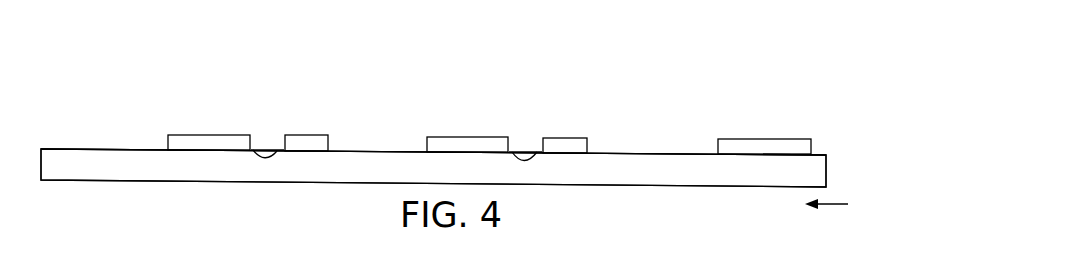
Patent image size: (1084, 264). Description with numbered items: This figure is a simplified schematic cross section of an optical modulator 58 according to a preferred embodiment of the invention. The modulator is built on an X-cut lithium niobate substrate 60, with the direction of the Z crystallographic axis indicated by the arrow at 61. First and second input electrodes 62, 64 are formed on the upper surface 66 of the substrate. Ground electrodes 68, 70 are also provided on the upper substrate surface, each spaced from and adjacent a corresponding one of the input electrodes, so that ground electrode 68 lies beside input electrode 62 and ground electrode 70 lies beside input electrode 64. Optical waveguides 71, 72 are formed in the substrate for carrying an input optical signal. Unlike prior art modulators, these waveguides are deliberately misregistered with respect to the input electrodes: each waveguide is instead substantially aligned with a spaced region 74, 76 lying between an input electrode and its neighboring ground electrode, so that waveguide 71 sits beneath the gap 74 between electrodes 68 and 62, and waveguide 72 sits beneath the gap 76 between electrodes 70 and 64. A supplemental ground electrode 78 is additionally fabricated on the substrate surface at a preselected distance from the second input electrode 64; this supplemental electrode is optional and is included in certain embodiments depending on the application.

The optical modulator 58 is at (689, 86).
The X-cut lithium niobate substrate 60 is at (642, 170).
The Z crystallographic axis direction 61 is at (832, 203).
The first input electrode 62 is at (308, 142).
The second input electrode 64 is at (567, 142).
The upper surface 66 is at (111, 149).
The ground electrode 68 is at (202, 142).
The ground electrode 70 is at (442, 142).
The optical waveguide 71 is at (273, 152).
The optical waveguide 72 is at (517, 155).
The spaced region 74 is at (270, 134).
The spaced region 76 is at (524, 130).
The supplemental ground electrode 78 is at (745, 143).